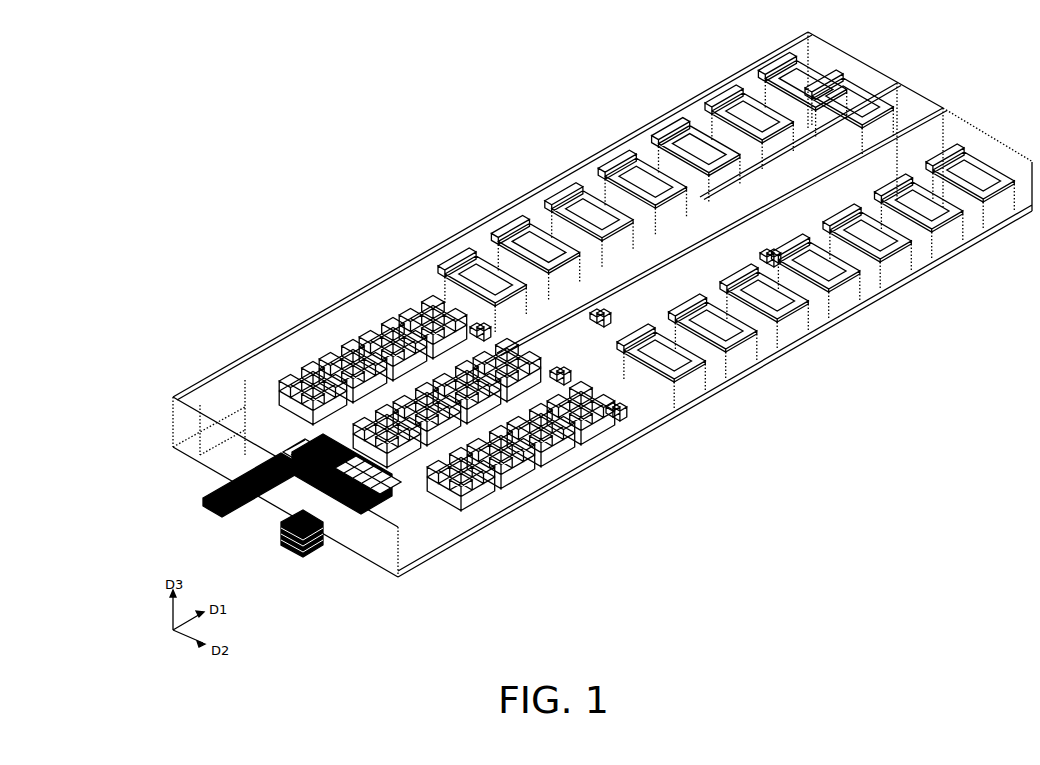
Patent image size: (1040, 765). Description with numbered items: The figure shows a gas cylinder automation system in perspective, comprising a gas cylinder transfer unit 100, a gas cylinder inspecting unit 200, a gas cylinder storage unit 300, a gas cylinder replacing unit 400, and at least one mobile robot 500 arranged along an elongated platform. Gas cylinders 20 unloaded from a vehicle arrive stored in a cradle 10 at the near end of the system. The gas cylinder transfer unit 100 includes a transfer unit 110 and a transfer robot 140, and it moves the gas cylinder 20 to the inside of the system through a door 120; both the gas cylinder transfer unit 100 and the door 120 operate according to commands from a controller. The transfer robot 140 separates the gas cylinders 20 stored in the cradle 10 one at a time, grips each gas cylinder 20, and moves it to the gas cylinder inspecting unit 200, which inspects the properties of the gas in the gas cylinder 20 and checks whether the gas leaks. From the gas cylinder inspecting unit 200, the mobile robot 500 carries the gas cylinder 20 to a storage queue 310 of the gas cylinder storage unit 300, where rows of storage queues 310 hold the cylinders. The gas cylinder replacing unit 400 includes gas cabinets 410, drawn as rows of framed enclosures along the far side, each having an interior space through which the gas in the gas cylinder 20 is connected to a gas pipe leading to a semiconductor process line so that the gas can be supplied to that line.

The cradle 10 is at (283, 540).
The gas cylinder 20 is at (325, 543).
The gas cylinder transfer unit 100 is at (203, 380).
The transfer unit 110 is at (208, 494).
The door 120 is at (205, 418).
The transfer robot 140 is at (383, 483).
The gas cylinder inspecting unit 200 is at (246, 356).
The gas cylinder storage unit 300 is at (288, 333).
The storage queue 310 is at (432, 304).
The gas cylinder replacing unit 400 is at (617, 160).
The gas cabinet 410 is at (670, 163).
The mobile robot 500 is at (476, 327).